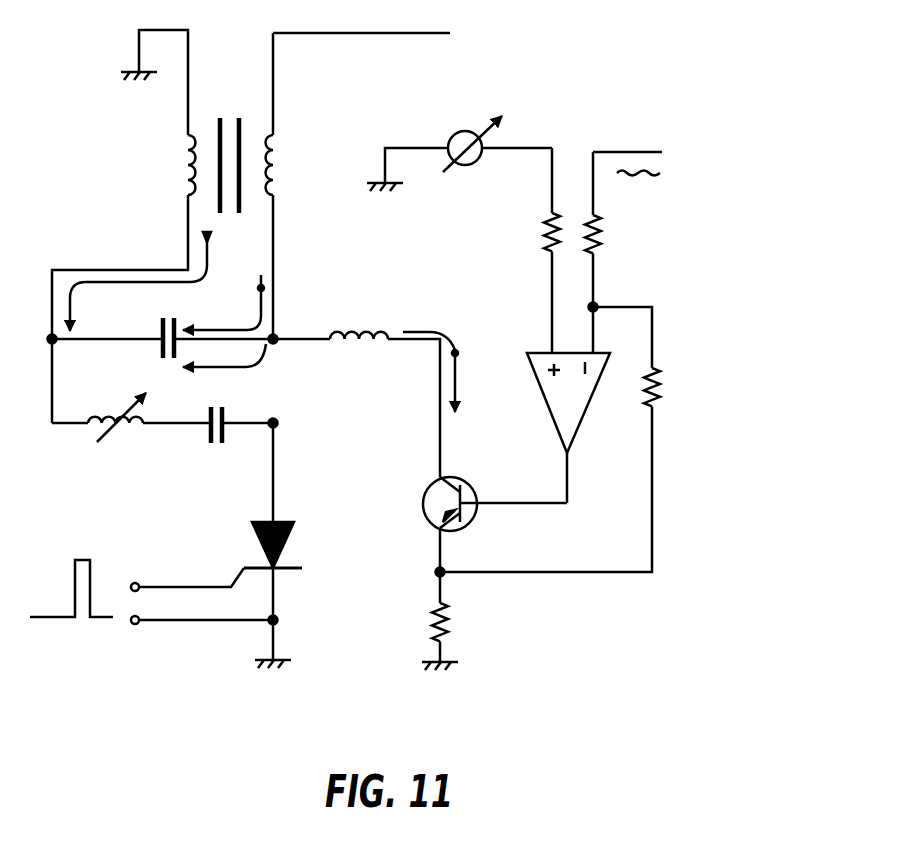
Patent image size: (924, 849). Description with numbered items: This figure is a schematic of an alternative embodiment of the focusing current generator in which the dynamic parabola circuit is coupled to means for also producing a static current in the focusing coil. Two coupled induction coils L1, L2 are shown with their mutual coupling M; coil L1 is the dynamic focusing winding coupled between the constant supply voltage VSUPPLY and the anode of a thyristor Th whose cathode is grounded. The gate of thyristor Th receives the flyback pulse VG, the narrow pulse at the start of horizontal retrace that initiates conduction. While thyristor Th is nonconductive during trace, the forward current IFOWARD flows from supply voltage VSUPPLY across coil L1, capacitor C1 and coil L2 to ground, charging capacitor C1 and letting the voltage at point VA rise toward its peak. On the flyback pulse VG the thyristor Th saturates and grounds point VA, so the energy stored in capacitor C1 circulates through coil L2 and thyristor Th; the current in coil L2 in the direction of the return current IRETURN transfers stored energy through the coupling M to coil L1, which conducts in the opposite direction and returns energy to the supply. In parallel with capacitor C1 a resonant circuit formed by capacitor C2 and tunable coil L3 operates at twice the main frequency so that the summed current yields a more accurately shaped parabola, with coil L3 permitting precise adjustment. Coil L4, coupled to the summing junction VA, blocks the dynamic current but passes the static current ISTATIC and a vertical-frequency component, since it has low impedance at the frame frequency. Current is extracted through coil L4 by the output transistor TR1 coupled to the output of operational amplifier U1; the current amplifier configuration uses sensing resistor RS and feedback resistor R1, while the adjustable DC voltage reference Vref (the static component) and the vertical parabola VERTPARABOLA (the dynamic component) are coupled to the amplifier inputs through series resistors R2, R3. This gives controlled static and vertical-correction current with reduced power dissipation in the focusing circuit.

The induction coil L1 is at (289, 186).
The induction coil L2 is at (124, 226).
The coil L3 is at (131, 430).
The coil L4 is at (356, 404).
The mutual inductance coupling M is at (267, 103).
The capacitor C1 is at (163, 326).
The capacitor C2 is at (241, 441).
The feedback resistor R1 is at (561, 439).
The series resistor R2 is at (535, 250).
The series resistor R3 is at (623, 252).
The sensing resistor RS is at (451, 621).
The output transistor TR1 is at (446, 477).
The operational amplifier U1 is at (568, 428).
The thyristor Th is at (226, 545).
The flyback pulse VG is at (151, 582).
The point VA is at (275, 341).
The adjustable DC voltage reference Vref is at (459, 146).
The supply voltage VSUPPLY is at (408, 39).
The return current IRETURN is at (207, 238).
The forward current IFOWARD is at (262, 288).
The static current ISTATIC is at (455, 353).
The vertical parabola VERTPARABOLA is at (726, 176).